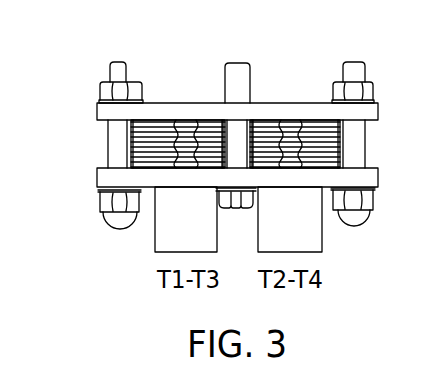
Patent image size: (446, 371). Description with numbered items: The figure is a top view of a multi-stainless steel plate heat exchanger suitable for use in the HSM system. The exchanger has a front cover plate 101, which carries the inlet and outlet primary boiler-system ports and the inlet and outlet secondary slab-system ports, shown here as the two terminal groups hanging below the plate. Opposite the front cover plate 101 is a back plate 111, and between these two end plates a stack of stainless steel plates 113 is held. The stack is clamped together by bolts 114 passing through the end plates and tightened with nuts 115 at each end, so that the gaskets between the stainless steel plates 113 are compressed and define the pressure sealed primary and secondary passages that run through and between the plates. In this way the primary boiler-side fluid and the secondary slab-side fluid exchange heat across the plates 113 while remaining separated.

The front cover plate 101 is at (97, 183).
The back plate 111 is at (97, 112).
The stainless steel plates 113 is at (130, 142).
The bolts 114 is at (113, 61).
The nuts 115 is at (142, 84).